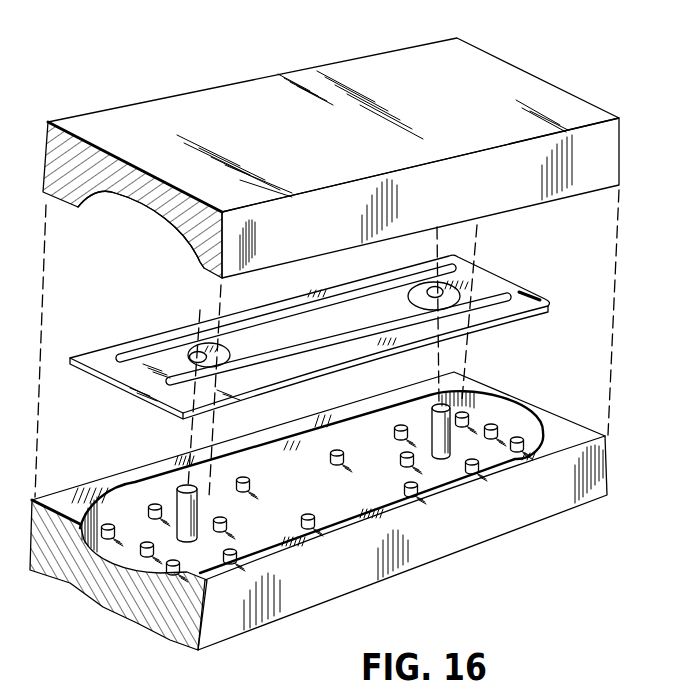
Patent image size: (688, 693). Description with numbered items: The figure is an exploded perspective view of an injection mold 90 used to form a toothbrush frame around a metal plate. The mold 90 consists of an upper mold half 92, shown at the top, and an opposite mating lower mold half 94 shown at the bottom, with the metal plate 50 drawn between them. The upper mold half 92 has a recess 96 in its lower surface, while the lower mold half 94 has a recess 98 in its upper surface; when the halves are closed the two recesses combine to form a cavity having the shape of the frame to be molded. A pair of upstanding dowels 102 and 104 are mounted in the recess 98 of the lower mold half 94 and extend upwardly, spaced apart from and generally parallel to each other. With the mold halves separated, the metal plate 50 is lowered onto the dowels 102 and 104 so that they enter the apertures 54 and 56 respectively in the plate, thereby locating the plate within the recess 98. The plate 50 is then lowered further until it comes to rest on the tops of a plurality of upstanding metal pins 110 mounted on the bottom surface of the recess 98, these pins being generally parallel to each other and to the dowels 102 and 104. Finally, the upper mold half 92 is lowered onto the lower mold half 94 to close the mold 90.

The upper mold half 92 is at (545, 77).
The injection mold 90 is at (618, 437).
The recess 96 is at (162, 216).
The metal plate 50 is at (173, 330).
The aperture 54 is at (211, 356).
The aperture 56 is at (411, 299).
The dowel 104 is at (446, 402).
The dowel 102 is at (183, 486).
The metal pins 110 is at (331, 459).
The recess 98 is at (131, 541).
The lower mold half 94 is at (560, 514).